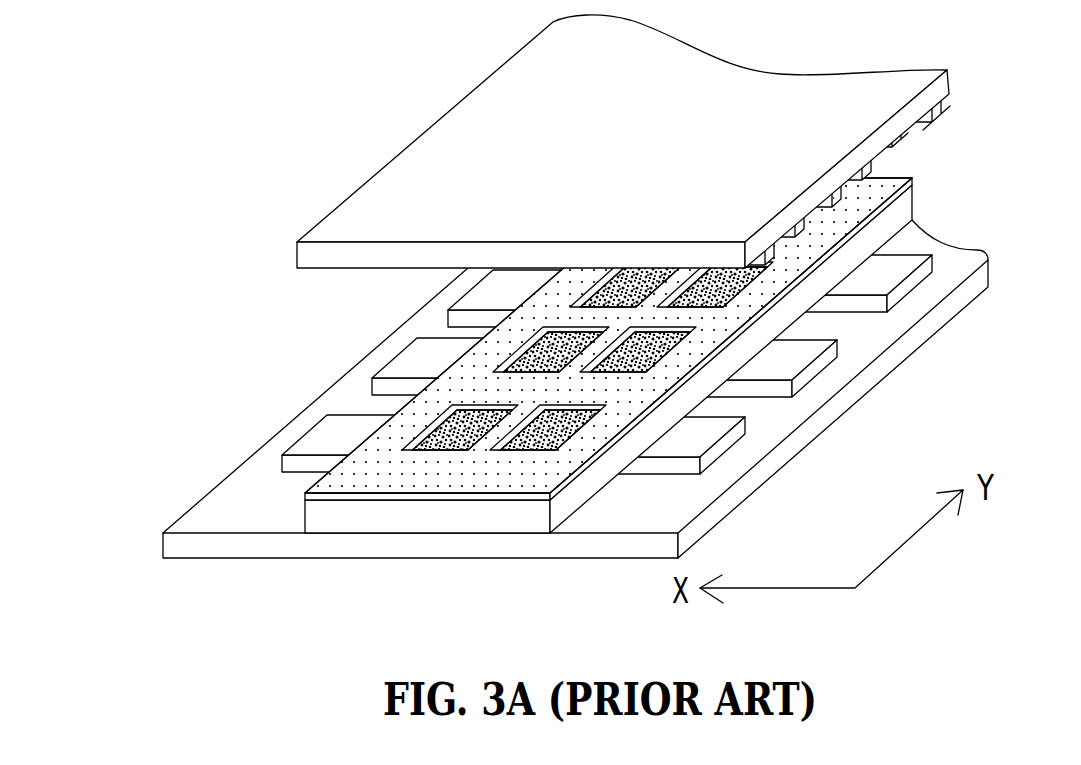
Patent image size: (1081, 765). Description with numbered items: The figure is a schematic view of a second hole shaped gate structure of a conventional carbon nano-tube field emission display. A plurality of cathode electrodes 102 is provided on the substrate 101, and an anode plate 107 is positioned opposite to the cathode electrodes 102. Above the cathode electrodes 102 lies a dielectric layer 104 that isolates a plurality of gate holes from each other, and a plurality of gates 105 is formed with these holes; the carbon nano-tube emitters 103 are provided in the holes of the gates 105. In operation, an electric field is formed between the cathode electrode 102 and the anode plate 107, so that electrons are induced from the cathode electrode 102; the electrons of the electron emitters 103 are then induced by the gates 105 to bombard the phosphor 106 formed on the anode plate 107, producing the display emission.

The substrate 101 is at (175, 547).
The cathode electrodes 102 is at (403, 368).
The carbon nano-tube emitters 103 is at (585, 352).
The dielectric layer 104 is at (503, 512).
The gates 105 is at (413, 478).
The phosphor 106 is at (933, 112).
The anode plate 107 is at (307, 245).